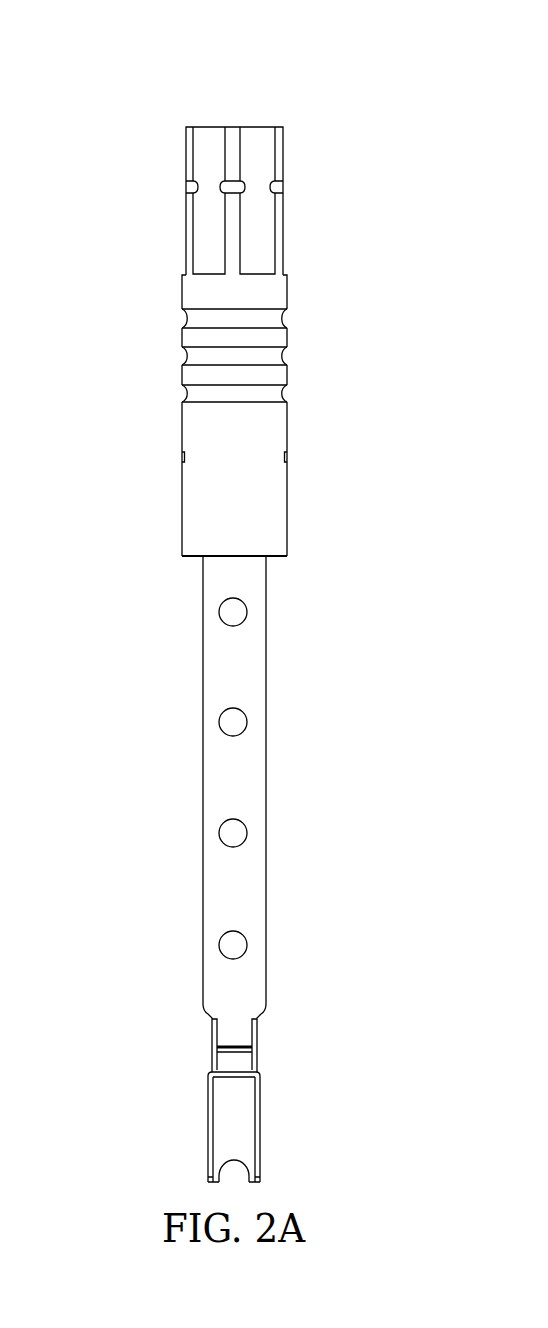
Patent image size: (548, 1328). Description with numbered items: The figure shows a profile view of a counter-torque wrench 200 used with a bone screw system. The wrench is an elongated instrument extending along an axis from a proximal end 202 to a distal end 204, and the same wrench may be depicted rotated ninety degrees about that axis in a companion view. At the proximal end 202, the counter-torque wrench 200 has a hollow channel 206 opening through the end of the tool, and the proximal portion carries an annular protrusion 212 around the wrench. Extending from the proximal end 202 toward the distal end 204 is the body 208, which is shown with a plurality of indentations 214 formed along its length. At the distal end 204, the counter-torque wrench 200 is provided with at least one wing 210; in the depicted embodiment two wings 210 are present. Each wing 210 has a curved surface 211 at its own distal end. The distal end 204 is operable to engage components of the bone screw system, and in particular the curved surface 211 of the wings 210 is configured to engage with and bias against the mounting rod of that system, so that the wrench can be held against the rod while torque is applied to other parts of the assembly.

The counter-torque wrench 200 is at (100, 56).
The proximal end 202 is at (151, 137).
The distal end 204 is at (178, 1126).
The hollow channel 206 is at (226, 110).
The body 208 is at (177, 786).
The wing 210 is at (261, 1127).
The curved surface 211 is at (227, 1176).
The annular protrusion 212 is at (186, 236).
The indentations 214 is at (245, 723).